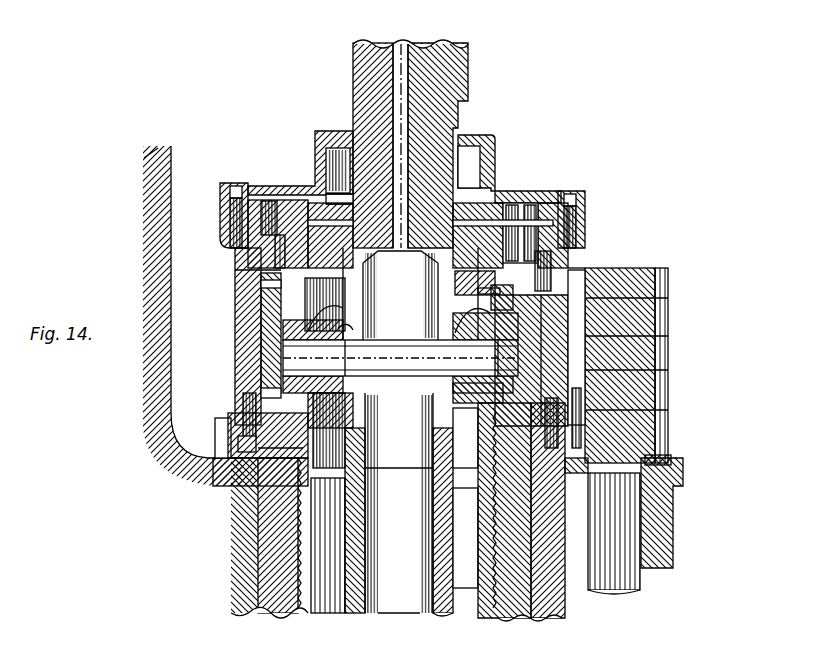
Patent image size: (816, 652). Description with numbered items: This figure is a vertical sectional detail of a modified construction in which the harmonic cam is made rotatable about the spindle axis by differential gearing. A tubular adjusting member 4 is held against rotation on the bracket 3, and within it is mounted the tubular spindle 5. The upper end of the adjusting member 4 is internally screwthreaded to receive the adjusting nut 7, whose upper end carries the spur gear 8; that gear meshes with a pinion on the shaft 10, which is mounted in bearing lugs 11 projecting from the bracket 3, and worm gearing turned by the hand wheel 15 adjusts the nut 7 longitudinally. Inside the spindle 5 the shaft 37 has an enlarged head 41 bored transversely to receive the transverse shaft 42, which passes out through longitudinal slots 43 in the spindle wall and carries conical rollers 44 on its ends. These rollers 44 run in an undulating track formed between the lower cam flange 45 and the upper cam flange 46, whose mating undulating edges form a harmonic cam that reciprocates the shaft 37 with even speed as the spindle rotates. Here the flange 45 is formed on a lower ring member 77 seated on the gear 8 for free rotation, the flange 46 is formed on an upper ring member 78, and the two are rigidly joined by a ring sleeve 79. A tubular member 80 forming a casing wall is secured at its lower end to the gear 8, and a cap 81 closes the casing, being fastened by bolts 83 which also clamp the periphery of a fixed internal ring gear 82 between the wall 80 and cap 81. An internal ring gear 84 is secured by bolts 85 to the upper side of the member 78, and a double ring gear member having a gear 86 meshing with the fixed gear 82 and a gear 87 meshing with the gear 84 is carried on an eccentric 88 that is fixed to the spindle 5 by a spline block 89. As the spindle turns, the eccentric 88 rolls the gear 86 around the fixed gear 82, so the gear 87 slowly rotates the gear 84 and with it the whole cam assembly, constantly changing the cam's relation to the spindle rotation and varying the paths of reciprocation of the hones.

The bracket 3 is at (557, 604).
The tubular adjusting member 4 is at (505, 610).
The tubular spindle 5 is at (345, 60).
The adjusting nut 7 is at (295, 526).
The spur gear 8 is at (215, 452).
The shaft 10 is at (605, 575).
The bearing lugs 11 is at (655, 522).
The hand wheel 15 is at (232, 205).
The shaft 37 is at (388, 606).
The head 41 is at (389, 503).
The transverse shaft 42 is at (400, 358).
The longitudinal slots 43 is at (418, 280).
The conical rollers 44 is at (400, 349).
The cam flange 45 is at (255, 368).
The cam flange 46 is at (233, 318).
The lower ring member 77 is at (240, 393).
The upper ring member 78 is at (262, 282).
The ring sleeve 79 is at (255, 306).
The tubular member 80 is at (236, 338).
The cap 81 is at (302, 180).
The fixed internal ring gear 82 is at (232, 180).
The bolts 83 is at (224, 176).
The internal ring gear 84 is at (234, 262).
The bolts 85 is at (578, 244).
The gear 86 is at (262, 195).
The gear 87 is at (236, 276).
The eccentric 88 is at (322, 186).
The spline block 89 is at (343, 212).